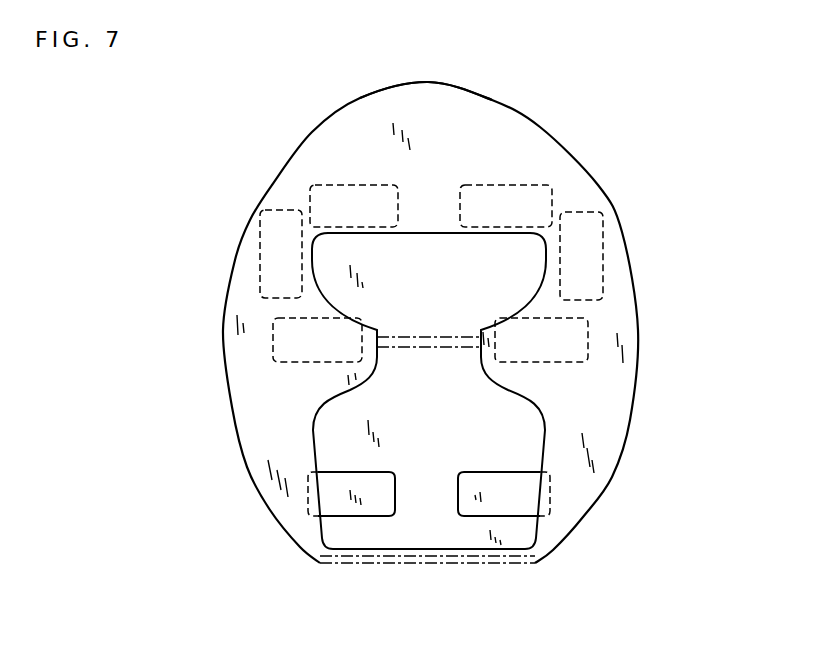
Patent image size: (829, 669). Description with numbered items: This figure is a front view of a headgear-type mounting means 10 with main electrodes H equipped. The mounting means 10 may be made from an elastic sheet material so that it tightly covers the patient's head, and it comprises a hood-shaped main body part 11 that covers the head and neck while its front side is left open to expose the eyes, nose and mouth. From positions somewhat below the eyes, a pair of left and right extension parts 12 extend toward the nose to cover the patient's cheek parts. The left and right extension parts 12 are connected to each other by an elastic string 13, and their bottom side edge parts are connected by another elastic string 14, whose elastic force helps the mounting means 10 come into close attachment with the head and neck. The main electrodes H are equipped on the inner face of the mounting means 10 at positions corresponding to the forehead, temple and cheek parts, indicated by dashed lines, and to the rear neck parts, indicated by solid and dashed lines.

The mounting means 10 is at (650, 106).
The main body part 11 is at (452, 105).
The extension parts 12 is at (362, 313).
The elastic string 13 is at (432, 335).
The elastic string 14 is at (428, 565).
The main electrodes H is at (342, 193).